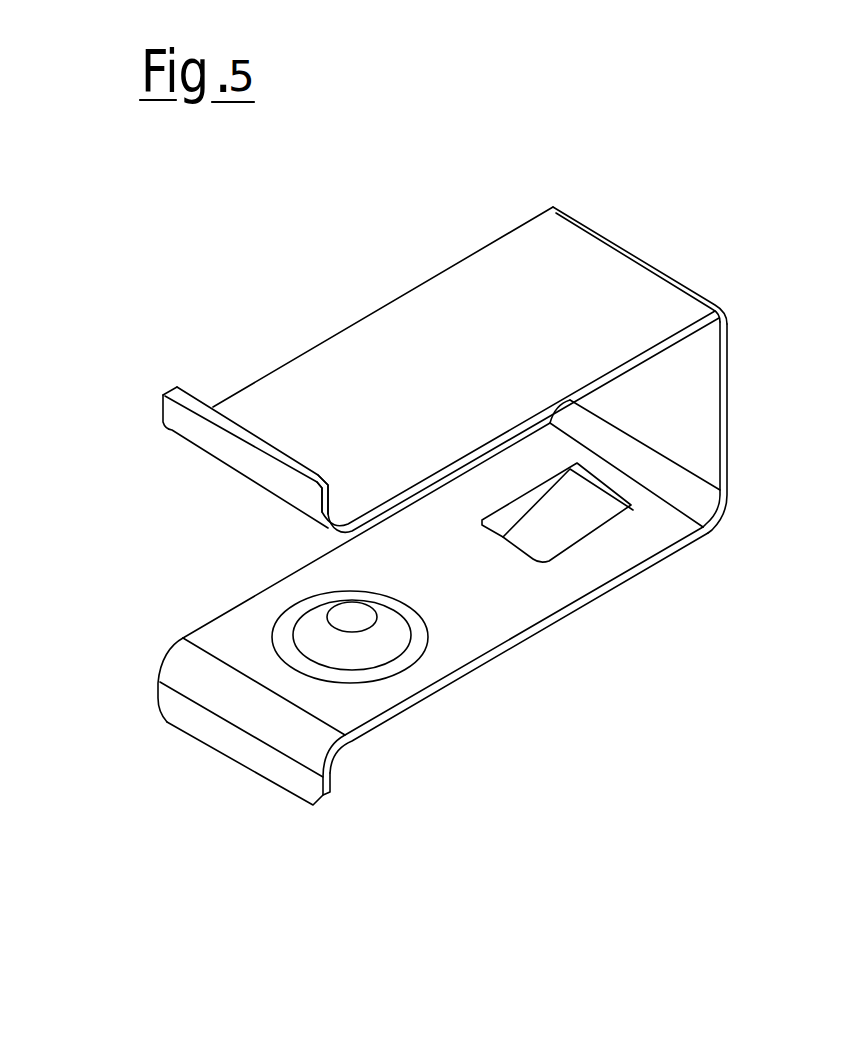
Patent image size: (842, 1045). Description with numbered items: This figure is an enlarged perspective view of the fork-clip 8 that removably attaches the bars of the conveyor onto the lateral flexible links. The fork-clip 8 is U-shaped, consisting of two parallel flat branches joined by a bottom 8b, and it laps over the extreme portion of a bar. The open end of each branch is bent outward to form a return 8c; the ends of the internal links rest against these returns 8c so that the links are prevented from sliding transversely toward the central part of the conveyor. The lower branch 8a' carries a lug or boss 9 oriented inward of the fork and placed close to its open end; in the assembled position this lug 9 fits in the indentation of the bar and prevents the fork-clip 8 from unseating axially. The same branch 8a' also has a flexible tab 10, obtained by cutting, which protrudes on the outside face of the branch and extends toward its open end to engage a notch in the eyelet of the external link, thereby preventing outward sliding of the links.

The fork-clip 8 is at (419, 249).
The branch 8a' is at (433, 600).
The bottom 8b is at (703, 415).
The return 8c is at (193, 418).
The lug or boss 9 is at (367, 645).
The flexible tab 10 is at (585, 523).